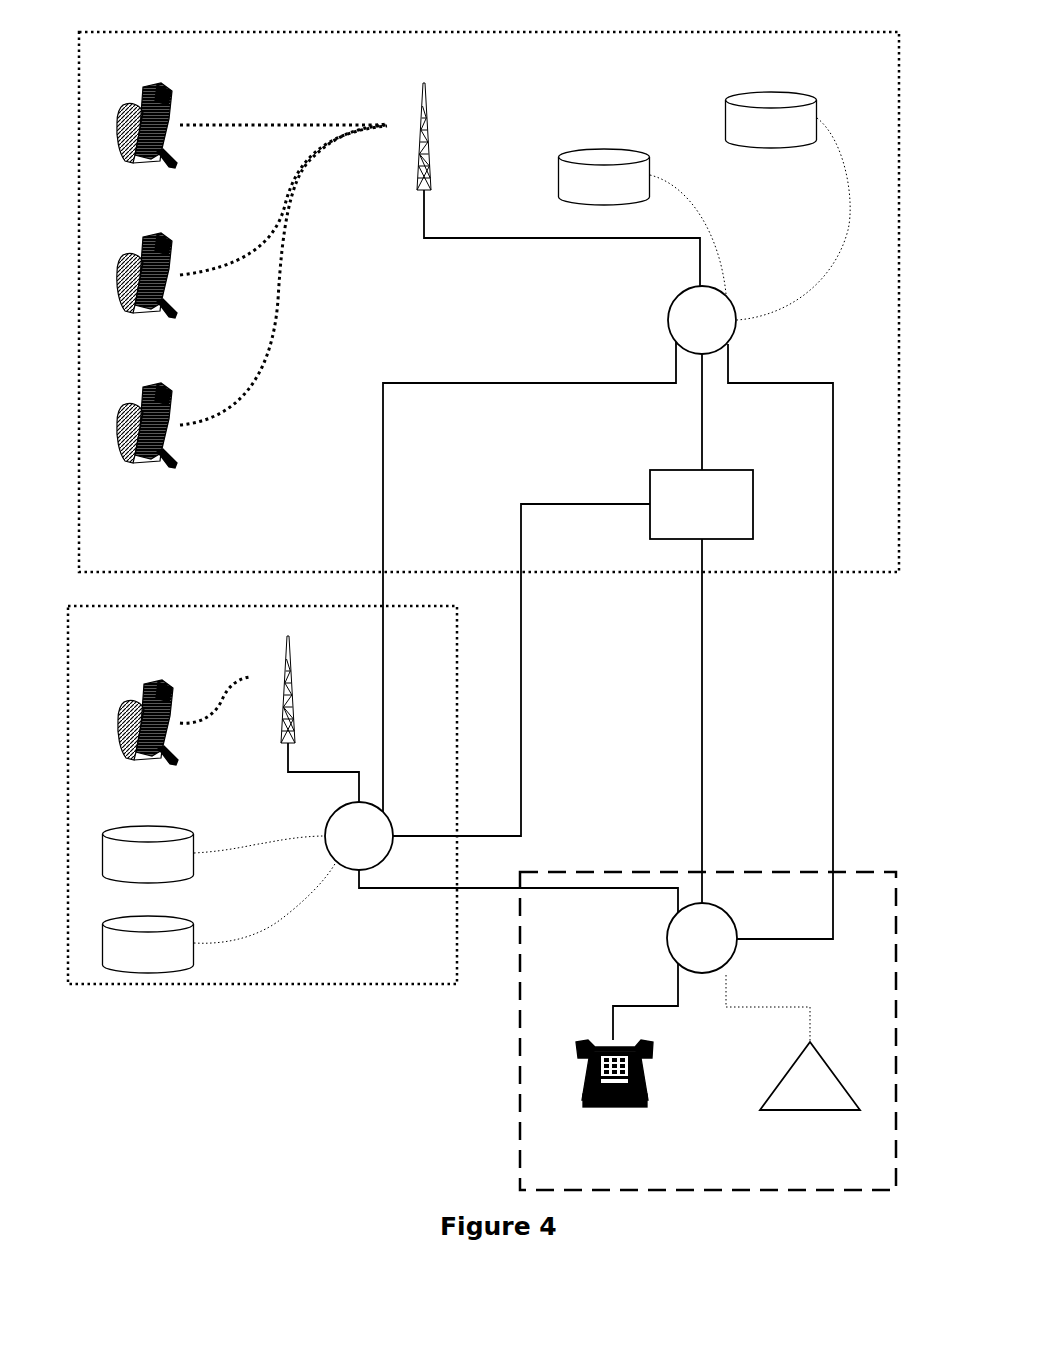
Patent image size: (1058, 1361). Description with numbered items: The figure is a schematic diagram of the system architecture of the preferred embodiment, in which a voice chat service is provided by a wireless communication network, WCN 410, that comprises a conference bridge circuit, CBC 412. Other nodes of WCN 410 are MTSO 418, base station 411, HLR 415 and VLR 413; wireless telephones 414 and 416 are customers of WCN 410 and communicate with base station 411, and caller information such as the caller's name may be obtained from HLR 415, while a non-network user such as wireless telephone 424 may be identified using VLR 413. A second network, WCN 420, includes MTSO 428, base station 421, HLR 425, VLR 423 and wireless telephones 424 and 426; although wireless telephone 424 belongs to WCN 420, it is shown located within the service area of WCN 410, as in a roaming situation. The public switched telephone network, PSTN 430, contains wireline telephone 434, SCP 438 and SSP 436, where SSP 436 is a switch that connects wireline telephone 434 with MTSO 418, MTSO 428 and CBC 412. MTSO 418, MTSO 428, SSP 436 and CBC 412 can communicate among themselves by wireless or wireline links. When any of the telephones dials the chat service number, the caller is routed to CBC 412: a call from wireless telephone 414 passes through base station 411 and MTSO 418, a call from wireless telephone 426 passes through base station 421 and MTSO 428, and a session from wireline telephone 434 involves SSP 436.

The WCN 410 is at (537, 31).
The base station 411 is at (430, 149).
The CBC 412 is at (753, 504).
The VLR 413 is at (604, 148).
The wireless telephone 414 is at (145, 83).
The HLR 415 is at (771, 91).
The wireless telephone 416 is at (145, 233).
The MTSO 418 is at (678, 291).
The WCN 420 is at (273, 985).
The base station 421 is at (295, 700).
The VLR 423 is at (148, 913).
The wireless telephone 424 is at (145, 383).
The HLR 425 is at (148, 822).
The wireless telephone 426 is at (146, 680).
The MTSO 428 is at (337, 806).
The PSTN 430 is at (519, 1033).
The wireline telephone 434 is at (615, 1107).
The SSP 436 is at (666, 940).
The SCP 438 is at (810, 1111).